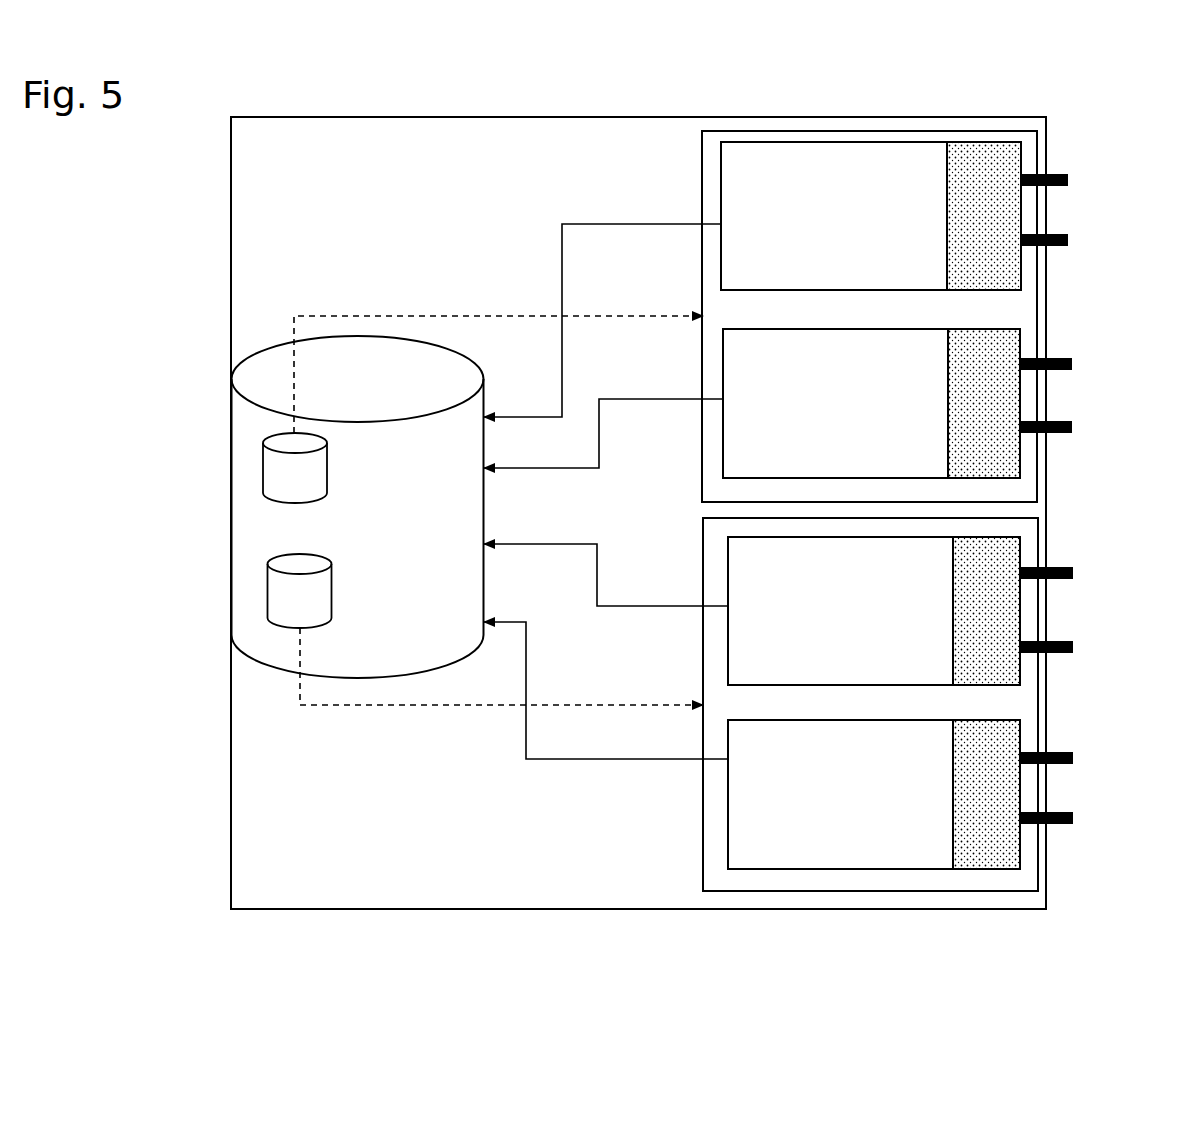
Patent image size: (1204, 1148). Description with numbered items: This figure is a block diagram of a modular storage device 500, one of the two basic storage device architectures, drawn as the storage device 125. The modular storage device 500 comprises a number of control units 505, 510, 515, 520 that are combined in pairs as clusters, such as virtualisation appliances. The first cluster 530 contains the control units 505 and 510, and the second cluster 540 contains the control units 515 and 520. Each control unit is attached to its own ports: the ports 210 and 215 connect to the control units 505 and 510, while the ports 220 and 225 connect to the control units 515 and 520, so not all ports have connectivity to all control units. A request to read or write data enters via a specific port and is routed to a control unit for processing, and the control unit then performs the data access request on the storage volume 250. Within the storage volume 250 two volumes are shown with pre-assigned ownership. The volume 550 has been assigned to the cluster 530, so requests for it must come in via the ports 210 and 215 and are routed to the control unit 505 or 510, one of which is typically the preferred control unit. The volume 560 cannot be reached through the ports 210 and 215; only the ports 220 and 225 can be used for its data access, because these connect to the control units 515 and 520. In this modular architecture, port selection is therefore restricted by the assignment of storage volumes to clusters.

The storage device 125 is at (205, 134).
The modular storage device 500 is at (352, 104).
The storage volume 250 is at (227, 402).
The volume 550 is at (295, 468).
The volume 560 is at (300, 591).
The cluster 530 is at (698, 186).
The cluster 540 is at (702, 861).
The control unit 505 is at (871, 216).
The control unit 510 is at (871, 403).
The control unit 515 is at (874, 611).
The control unit 520 is at (874, 794).
The port 210 is at (1055, 170).
The port 215 is at (1065, 355).
The port 220 is at (1062, 565).
The port 225 is at (1058, 749).